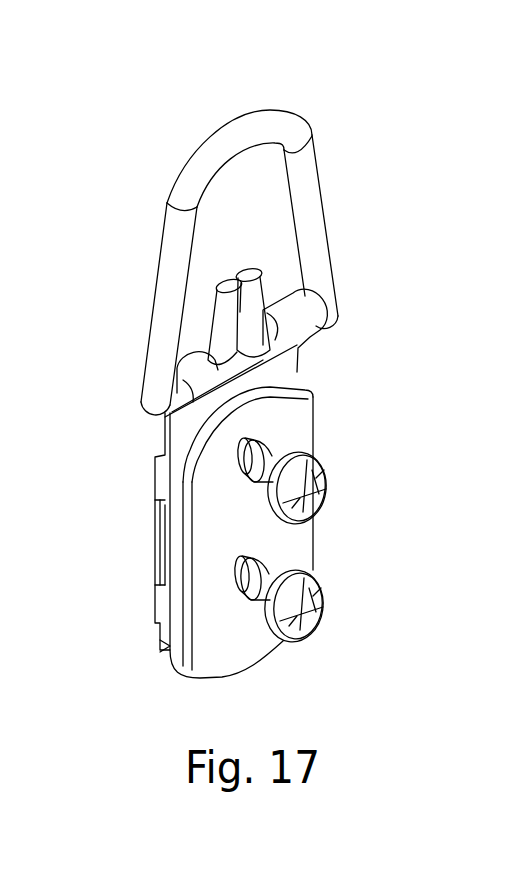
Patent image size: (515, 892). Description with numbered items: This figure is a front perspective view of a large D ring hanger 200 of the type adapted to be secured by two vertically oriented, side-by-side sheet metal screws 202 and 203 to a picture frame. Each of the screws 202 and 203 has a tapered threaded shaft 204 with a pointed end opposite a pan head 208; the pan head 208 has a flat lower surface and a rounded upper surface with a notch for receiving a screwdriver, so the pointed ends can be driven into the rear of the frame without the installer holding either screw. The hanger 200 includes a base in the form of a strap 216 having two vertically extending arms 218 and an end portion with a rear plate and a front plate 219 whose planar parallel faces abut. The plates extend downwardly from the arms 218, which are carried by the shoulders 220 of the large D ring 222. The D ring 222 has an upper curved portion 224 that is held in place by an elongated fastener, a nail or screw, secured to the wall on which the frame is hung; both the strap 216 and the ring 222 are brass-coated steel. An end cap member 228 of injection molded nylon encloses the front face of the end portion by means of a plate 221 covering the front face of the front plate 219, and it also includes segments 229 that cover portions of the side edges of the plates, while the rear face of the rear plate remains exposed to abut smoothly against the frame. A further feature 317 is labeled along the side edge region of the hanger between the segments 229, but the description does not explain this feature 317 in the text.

The large D ring hanger 200 is at (372, 424).
The sheet metal screw 202 is at (330, 466).
The sheet metal screw 203 is at (327, 583).
The tapered threaded shaft 204 is at (273, 453).
The pan head 208 is at (296, 513).
The strap 216 is at (155, 432).
The arms 218 is at (192, 358).
The front plate 219 is at (162, 552).
The shoulders 220 is at (178, 392).
The plate 221 is at (224, 648).
The large D ring 222 is at (166, 263).
The upper curved portion 224 is at (198, 161).
The end cap member 228 is at (258, 648).
The segments 229 is at (168, 480).
The slot 317 is at (157, 511).